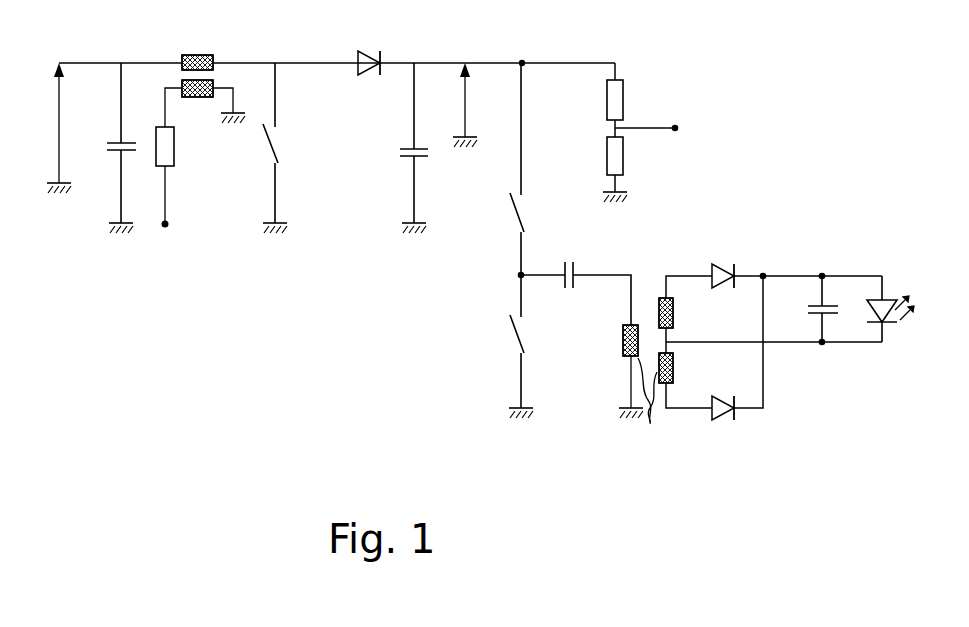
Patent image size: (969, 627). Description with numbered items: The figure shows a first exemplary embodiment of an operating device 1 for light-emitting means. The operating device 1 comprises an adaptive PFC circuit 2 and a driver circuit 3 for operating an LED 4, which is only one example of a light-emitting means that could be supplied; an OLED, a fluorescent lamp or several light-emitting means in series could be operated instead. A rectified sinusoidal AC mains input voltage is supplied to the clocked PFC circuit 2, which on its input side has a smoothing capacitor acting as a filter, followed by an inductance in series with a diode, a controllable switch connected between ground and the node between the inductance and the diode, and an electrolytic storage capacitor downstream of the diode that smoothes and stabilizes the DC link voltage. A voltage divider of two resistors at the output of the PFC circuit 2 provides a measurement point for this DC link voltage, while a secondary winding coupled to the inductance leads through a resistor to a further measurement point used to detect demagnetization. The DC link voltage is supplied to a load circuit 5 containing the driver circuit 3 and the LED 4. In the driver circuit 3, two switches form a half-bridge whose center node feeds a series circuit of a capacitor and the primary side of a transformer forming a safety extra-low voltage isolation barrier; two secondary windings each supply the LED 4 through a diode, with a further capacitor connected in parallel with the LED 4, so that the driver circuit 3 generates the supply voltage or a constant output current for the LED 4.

The operating device 1 is at (472, 309).
The adaptive PFC circuit 2 is at (397, 258).
The driver circuit 3 is at (822, 457).
The LED 4 is at (890, 323).
The load circuit 5 is at (695, 329).